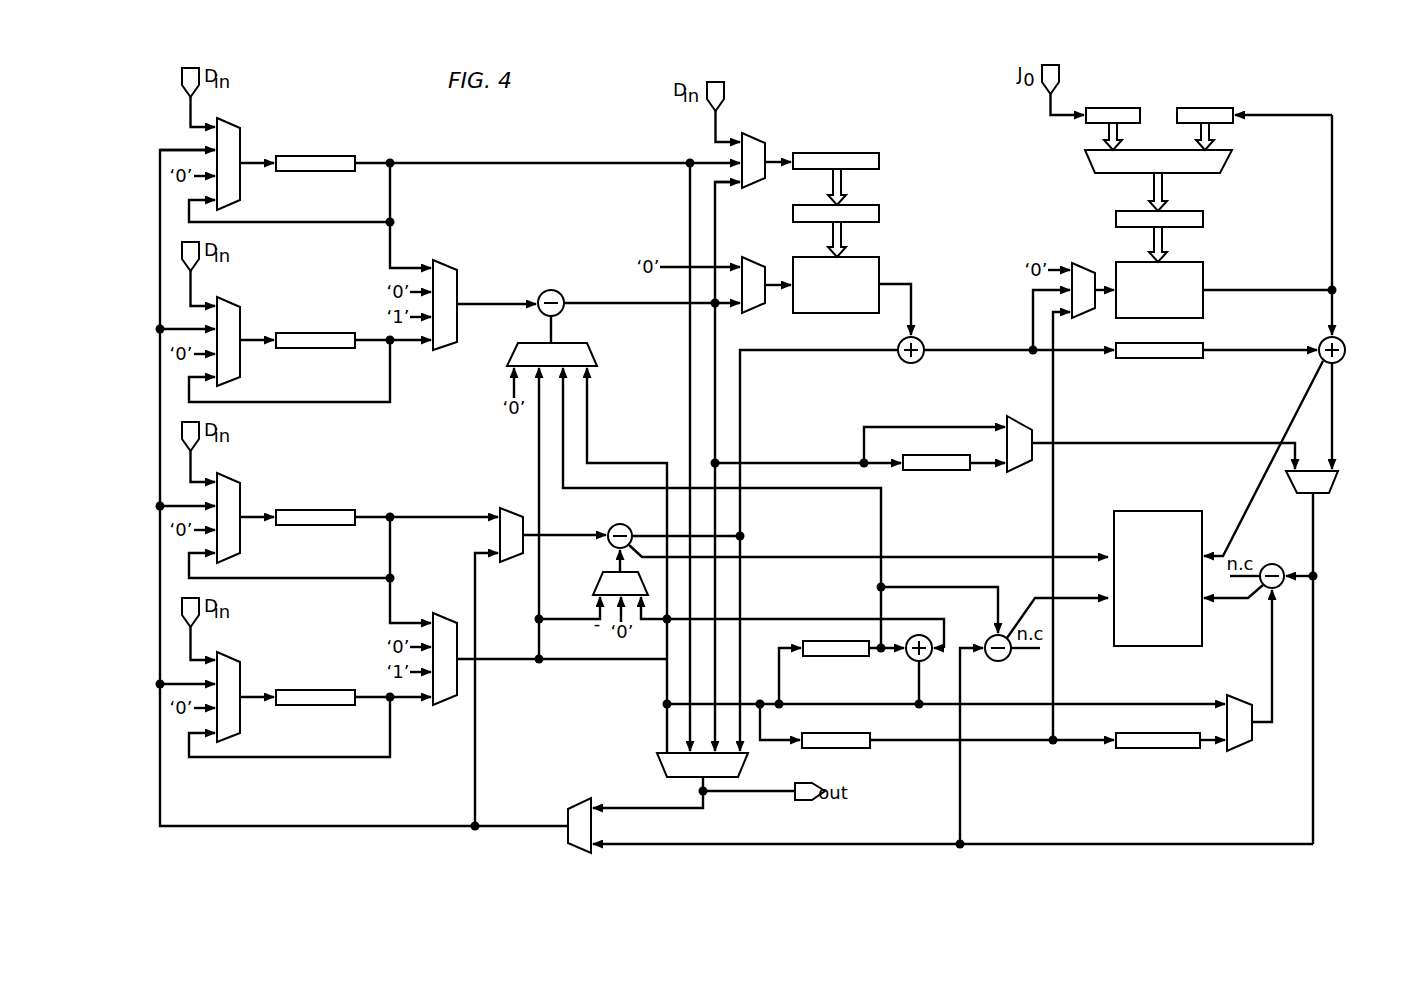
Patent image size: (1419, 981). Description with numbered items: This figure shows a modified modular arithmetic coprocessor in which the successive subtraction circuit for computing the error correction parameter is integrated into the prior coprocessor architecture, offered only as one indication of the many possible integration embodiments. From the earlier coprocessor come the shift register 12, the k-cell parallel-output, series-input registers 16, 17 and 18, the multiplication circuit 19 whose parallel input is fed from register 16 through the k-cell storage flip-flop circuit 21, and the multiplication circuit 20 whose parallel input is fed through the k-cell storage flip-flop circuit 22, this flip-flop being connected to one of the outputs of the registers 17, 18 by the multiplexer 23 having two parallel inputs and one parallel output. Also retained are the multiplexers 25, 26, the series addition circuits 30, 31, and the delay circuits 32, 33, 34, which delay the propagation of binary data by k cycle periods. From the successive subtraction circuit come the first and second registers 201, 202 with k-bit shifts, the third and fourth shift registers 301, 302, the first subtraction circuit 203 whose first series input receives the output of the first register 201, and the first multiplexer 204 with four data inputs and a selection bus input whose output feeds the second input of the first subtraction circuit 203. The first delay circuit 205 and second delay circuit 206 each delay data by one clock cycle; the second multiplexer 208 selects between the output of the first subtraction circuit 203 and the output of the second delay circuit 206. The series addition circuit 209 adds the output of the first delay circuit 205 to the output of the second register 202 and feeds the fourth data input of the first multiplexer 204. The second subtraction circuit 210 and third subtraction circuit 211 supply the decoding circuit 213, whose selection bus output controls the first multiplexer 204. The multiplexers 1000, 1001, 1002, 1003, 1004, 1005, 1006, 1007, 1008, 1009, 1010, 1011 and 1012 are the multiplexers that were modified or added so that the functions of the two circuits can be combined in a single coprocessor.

The multiplexer 1000 is at (237, 124).
The multiplexer 1001 is at (237, 303).
The multiplexer 1002 is at (237, 479).
The multiplexer 1003 is at (237, 658).
The multiplexer 1004 is at (438, 260).
The multiplexer 1005 is at (438, 613).
The multiplexer 1006 is at (505, 508).
The multiplexer 1007 is at (600, 586).
The multiplexer 1008 is at (752, 138).
The multiplexer 1009 is at (661, 769).
The multiplexer 1010 is at (576, 803).
The multiplexer 1011 is at (1240, 751).
The multiplexer 1012 is at (1338, 482).
The first register 201 is at (312, 156).
The second register 202 is at (312, 510).
The third shift register 301 is at (312, 333).
The fourth shift register 302 is at (312, 690).
The first subtraction circuit 203 is at (551, 290).
The first multiplexer 204 is at (592, 356).
The shift register 12 is at (611, 529).
The register 16 is at (879, 162).
The k-cell storage flip-flop circuit 21 is at (879, 214).
The multiplication circuit 19 is at (879, 272).
The multiplexer 25 is at (752, 262).
The series addition circuit 30 is at (923, 343).
The register 17 is at (1113, 108).
The register 18 is at (1205, 108).
The multiplexer 23 is at (1227, 162).
The k-cell storage flip-flop circuit 22 is at (1203, 221).
The multiplication circuit 20 is at (1203, 302).
The multiplexer 26 is at (1078, 263).
The series addition circuit 31 is at (1345, 356).
The delay circuit 34 is at (1158, 358).
The second multiplexer 208 is at (1016, 416).
The second delay circuit 206 is at (937, 470).
The decoding circuit 213 is at (1158, 511).
The second subtraction circuit 210 is at (1273, 564).
The first delay circuit 205 is at (838, 657).
The series addition circuit 209 is at (909, 659).
The third subtraction circuit 211 is at (1010, 660).
The delay circuit 32 is at (870, 746).
The delay circuit 33 is at (1158, 748).